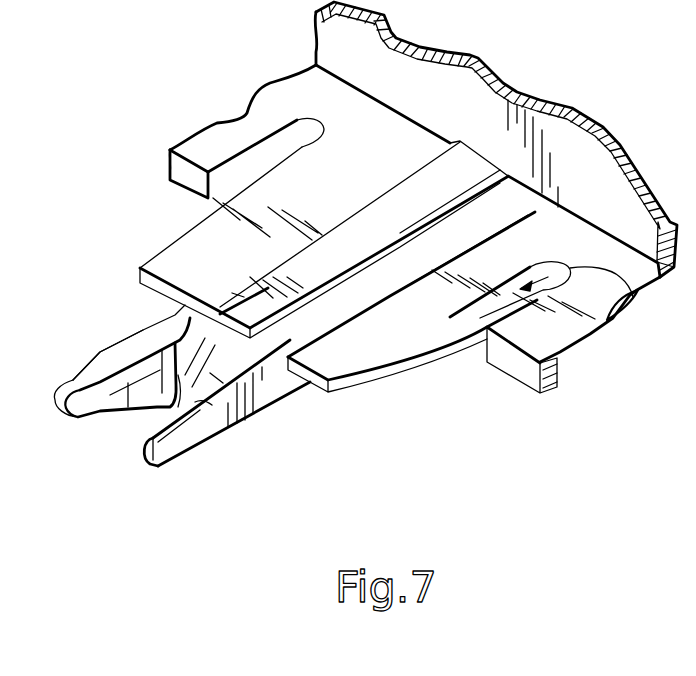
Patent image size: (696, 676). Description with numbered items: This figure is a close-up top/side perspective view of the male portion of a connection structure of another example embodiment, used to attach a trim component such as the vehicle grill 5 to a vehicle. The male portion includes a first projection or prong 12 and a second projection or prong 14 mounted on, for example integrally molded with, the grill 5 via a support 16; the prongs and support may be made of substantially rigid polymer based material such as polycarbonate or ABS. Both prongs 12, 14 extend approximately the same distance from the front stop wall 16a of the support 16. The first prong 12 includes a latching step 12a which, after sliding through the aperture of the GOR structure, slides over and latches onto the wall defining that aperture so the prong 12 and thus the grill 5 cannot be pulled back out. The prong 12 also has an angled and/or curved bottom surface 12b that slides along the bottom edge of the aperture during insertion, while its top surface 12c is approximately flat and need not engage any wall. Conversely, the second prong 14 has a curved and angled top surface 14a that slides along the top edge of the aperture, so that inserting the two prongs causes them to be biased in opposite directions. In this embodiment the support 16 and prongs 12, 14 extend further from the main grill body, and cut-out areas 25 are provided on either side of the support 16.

The vehicle grill 5 is at (598, 167).
The first projection or prong 12 is at (58, 418).
The latching step 12a is at (173, 407).
The angled and/or curved bottom surface 12b is at (167, 405).
The flat top surface 12c is at (107, 369).
The second projection or prong 14 is at (152, 468).
The curved and angled top surface 14a is at (210, 405).
The support 16 is at (357, 348).
The front stop wall 16a is at (146, 283).
The cut-out areas 25 is at (212, 205).